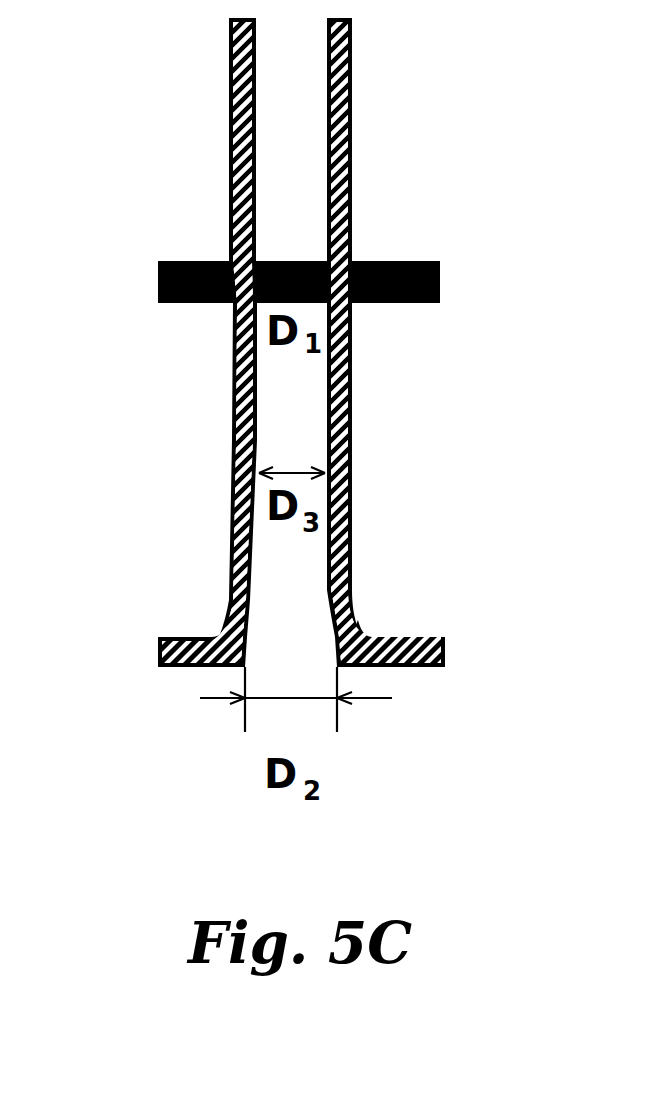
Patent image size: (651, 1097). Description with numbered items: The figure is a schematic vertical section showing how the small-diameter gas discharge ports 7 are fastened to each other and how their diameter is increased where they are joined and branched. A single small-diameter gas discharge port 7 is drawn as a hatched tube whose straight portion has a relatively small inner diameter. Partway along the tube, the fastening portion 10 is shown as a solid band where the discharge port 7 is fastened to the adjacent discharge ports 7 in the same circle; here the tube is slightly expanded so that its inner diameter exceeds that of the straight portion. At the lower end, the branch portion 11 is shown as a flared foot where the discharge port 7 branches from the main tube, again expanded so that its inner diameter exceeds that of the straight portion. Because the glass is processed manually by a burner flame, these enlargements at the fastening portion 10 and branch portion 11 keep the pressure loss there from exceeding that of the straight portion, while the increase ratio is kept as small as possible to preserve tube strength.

The small-diameter gas discharge port 7 is at (280, 113).
The fastening portion 10 is at (158, 283).
The branch portion 11 is at (307, 668).